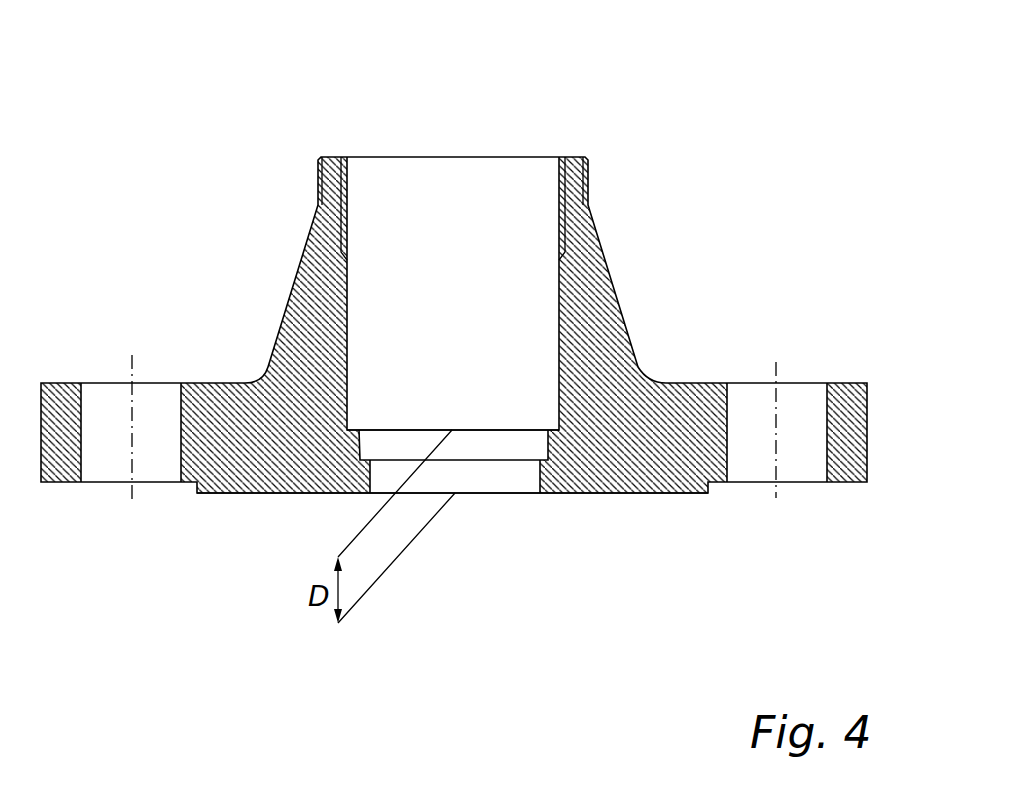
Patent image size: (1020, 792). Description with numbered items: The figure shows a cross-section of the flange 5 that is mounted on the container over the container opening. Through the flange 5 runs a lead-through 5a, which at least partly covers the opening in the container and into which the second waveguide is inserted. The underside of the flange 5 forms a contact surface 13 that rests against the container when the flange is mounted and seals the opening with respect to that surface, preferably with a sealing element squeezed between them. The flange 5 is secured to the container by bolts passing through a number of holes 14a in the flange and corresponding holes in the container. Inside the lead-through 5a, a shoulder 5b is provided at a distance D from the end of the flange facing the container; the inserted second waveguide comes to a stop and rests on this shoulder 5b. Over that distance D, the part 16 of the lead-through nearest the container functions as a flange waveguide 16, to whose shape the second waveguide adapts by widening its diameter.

The flange 5 is at (684, 119).
The lead-through 5a is at (462, 228).
The shoulder 5b is at (348, 430).
The contact surface 13 is at (262, 502).
The holes 14a is at (155, 403).
The flange waveguide 16 is at (505, 433).